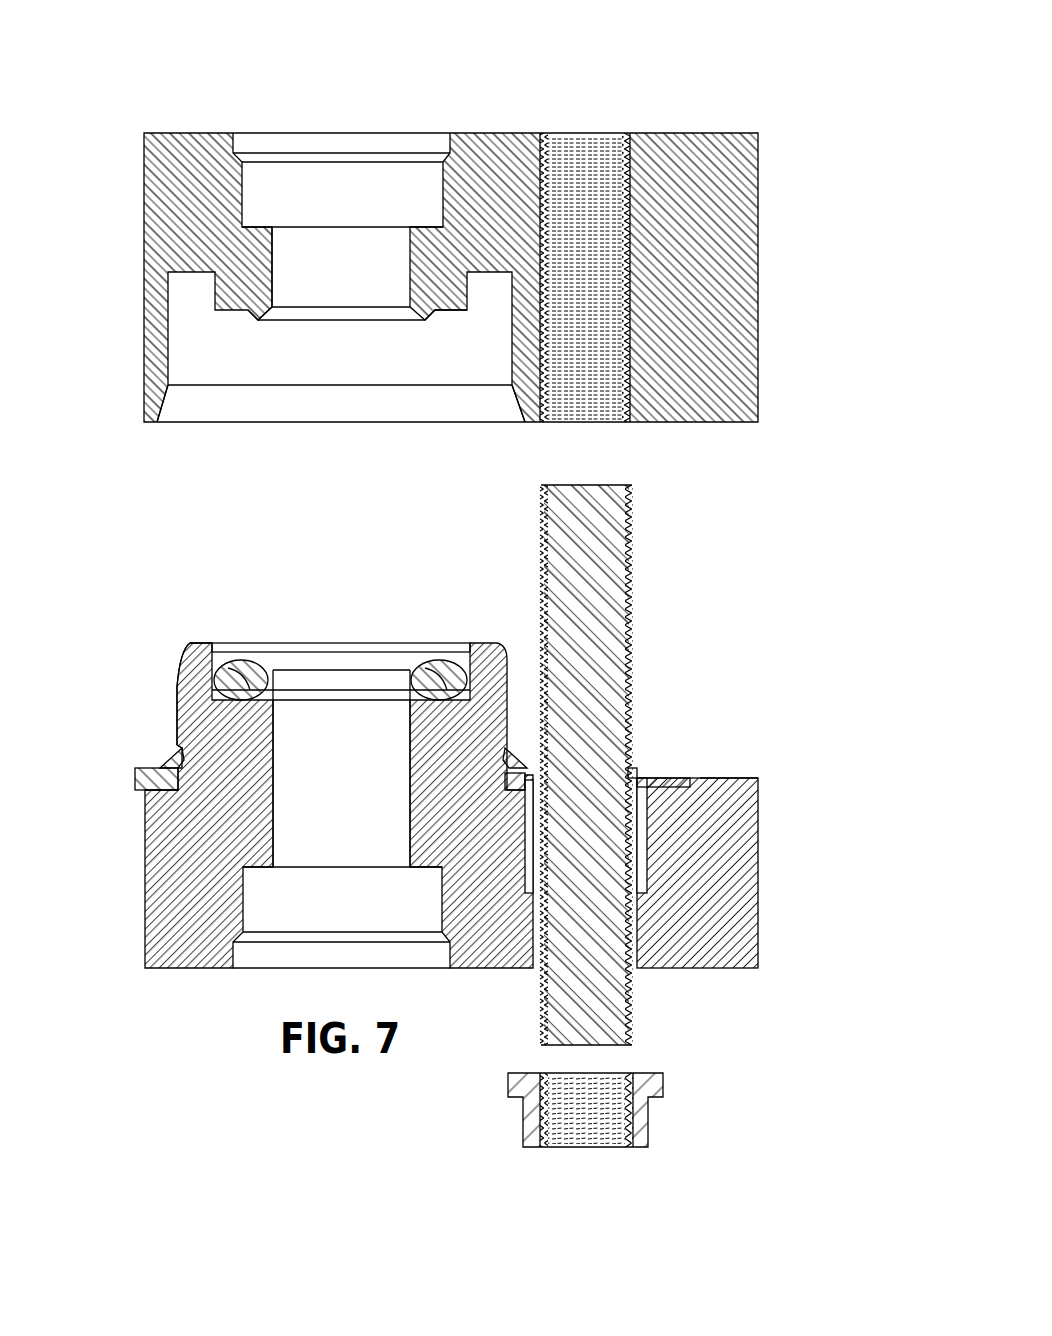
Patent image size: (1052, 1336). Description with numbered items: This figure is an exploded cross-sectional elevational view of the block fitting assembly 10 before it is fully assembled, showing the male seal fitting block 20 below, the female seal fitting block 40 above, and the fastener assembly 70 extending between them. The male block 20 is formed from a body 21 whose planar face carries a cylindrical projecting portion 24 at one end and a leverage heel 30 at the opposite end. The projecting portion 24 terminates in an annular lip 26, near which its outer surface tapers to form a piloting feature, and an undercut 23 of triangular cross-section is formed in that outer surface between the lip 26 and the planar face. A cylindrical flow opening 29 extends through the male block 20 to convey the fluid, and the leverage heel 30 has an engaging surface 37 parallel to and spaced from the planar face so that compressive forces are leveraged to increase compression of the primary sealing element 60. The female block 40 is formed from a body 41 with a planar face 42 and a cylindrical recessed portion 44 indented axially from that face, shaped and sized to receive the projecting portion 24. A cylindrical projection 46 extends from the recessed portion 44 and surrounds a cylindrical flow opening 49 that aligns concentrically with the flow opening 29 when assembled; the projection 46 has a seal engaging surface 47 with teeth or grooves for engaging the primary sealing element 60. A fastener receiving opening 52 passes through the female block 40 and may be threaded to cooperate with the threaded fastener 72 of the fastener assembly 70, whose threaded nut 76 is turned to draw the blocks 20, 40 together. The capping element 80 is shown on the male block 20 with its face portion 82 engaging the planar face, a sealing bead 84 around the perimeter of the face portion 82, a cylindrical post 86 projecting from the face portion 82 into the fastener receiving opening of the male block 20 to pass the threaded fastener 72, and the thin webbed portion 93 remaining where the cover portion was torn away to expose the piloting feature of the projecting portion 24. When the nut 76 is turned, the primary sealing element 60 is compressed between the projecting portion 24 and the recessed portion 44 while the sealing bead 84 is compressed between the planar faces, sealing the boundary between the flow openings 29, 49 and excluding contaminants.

The block fitting assembly 10 is at (663, 84).
The male seal fitting block 20 is at (467, 765).
The body 21 is at (467, 765).
The undercut 23 is at (163, 748).
The cylindrical projecting portion 24 is at (170, 686).
The annular lip 26 is at (198, 646).
The cylindrical flow opening 29 is at (410, 778).
The leverage heel 30 is at (709, 824).
The engaging surface 37 is at (720, 778).
The female seal fitting block 40 is at (517, 286).
The body 41 is at (517, 286).
The planar face 42 is at (670, 423).
The cylindrical recessed portion 44 is at (178, 402).
The cylindrical projection 46 is at (443, 330).
The seal engaging surface 47 is at (256, 324).
The cylindrical flow opening 49 is at (410, 268).
The fastener receiving opening 52 is at (540, 181).
The primary sealing element 60 is at (338, 694).
The fastener assembly 70 is at (648, 844).
The threaded fastener 72 is at (636, 1010).
The threaded nut 76 is at (645, 1141).
The dual sealing and capping element 80 is at (114, 808).
The face portion 82 is at (678, 778).
The sealing bead 84 is at (135, 780).
The cylindrical post 86 is at (646, 818).
The webbed portion 93 is at (154, 758).